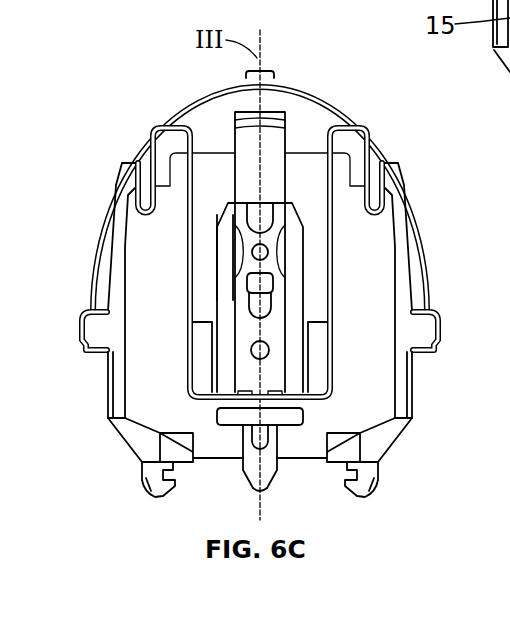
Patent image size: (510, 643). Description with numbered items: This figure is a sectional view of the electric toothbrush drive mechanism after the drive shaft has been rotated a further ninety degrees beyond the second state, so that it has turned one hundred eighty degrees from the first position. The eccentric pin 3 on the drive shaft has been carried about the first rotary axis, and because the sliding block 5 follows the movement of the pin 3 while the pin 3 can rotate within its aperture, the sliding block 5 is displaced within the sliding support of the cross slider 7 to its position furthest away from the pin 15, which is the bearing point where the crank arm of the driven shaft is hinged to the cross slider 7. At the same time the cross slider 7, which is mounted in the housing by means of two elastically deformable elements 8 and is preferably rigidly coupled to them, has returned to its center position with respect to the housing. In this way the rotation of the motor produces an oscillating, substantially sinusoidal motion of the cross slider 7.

The pin 3 is at (252, 253).
The sliding block 5 is at (240, 213).
The cross slider 7 is at (297, 238).
The elastically deformable elements 8 is at (333, 277).
The pin 15 is at (251, 350).